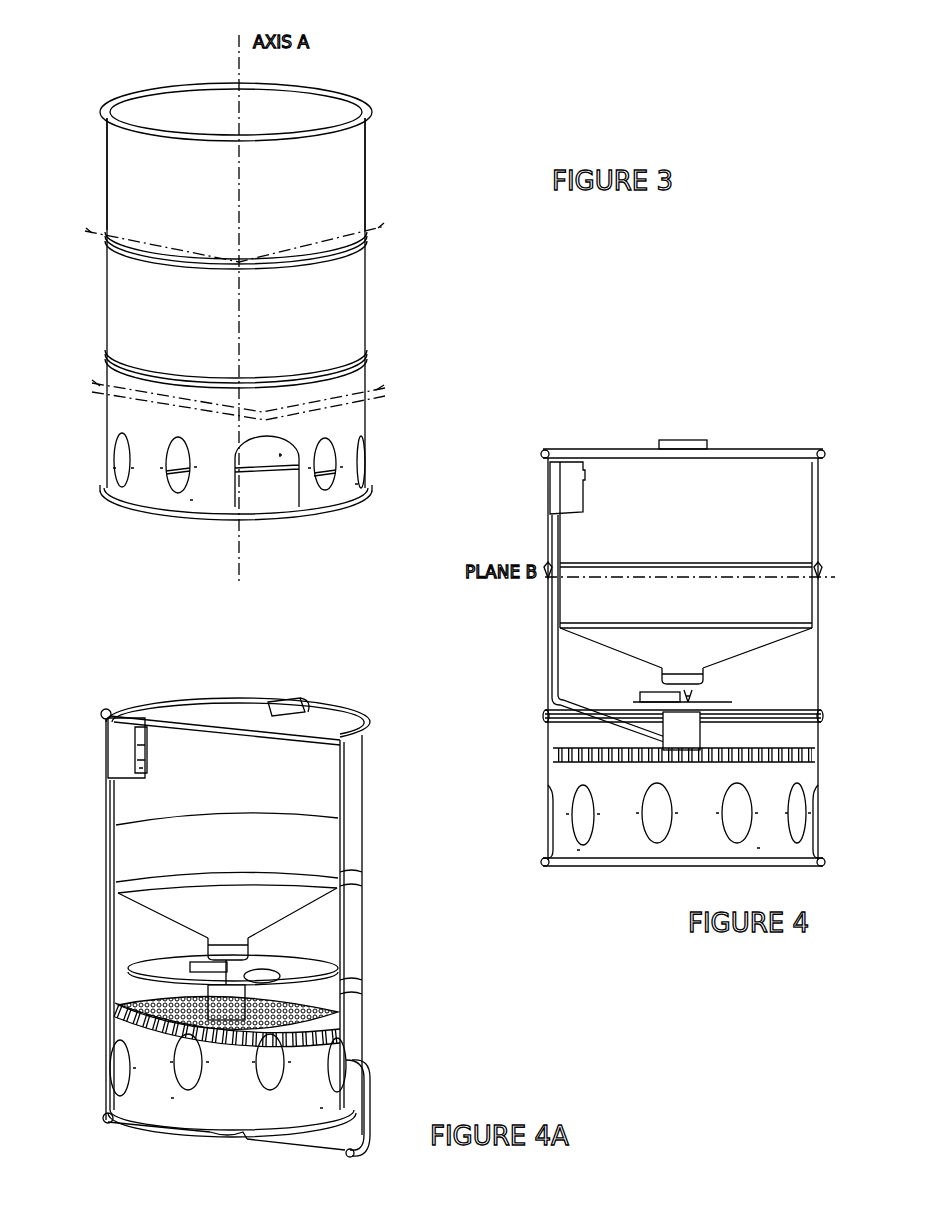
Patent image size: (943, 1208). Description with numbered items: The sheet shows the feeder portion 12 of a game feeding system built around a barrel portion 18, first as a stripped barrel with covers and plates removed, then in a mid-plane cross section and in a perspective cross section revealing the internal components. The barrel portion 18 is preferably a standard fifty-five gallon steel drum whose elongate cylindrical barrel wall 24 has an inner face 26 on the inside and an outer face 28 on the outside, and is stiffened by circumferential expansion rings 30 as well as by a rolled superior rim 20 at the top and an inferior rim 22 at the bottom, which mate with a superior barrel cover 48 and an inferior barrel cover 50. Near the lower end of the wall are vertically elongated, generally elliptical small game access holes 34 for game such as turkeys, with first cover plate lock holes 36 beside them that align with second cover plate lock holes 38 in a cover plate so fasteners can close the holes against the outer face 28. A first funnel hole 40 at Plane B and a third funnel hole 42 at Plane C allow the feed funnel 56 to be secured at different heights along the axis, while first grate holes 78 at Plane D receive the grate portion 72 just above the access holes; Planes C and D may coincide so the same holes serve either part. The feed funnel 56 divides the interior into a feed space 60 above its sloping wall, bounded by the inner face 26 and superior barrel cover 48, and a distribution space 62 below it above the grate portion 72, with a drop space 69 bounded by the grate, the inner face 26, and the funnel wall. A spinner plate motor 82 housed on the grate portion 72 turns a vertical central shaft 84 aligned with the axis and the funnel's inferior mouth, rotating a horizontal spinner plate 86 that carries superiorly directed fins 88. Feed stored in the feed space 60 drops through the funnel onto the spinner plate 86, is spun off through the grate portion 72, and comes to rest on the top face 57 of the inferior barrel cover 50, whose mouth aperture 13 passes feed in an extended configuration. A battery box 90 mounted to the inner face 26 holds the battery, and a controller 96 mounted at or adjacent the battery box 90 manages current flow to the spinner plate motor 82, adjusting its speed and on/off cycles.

In FIG. 4, the feeder portion 12 is at (762, 424).
In FIG. 4A, the mouth aperture 13 is at (229, 1142).
In FIG. 3, the barrel portion 18 is at (83, 76).
In FIG. 3, the superior rim 20 is at (348, 96).
In FIG. 3, the inferior rim 22 is at (108, 506).
In FIG. 3, the barrel wall 24 is at (104, 182).
In FIG. 4A, the barrel wall 24 is at (364, 798).
In FIG. 3, the inner face 26 is at (213, 110).
In FIG. 4, the inner face 26 is at (806, 541).
In FIG. 3, the outer face 28 is at (325, 165).
In FIG. 4A, the outer face 28 is at (352, 758).
In FIG. 3, the expansion ring 30 is at (372, 251).
In FIG. 3, the small game access hole 34 is at (182, 486).
In FIG. 4, the small game access hole 34 is at (650, 832).
In FIG. 3, the first cover plate lock hole 36 is at (206, 480).
In FIG. 4, the first cover plate lock hole 36 is at (594, 822).
In FIG. 3, the second cover plate lock hole 38 is at (362, 492).
In FIG. 3, the first funnel hole 40 is at (112, 233).
In FIG. 3, the third funnel hole 42 is at (112, 385).
In FIG. 4A, the superior barrel cover 48 is at (200, 716).
In FIG. 4A, the inferior barrel cover 50 is at (291, 1132).
In FIG. 4, the feed funnel 56 is at (571, 588).
In FIG. 3, the top face 57 is at (284, 500).
In FIG. 4A, the top face 57 is at (222, 1120).
In FIG. 4, the feed space 60 is at (598, 548).
In FIG. 4A, the feed space 60 is at (175, 795).
In FIG. 4, the distribution space 62 is at (778, 681).
In FIG. 4A, the distribution space 62 is at (314, 943).
In FIG. 4, the drop space 69 is at (692, 846).
In FIG. 4A, the drop space 69 is at (310, 1089).
In FIG. 4, the grate portion 72 is at (584, 748).
In FIG. 4A, the grate portion 72 is at (150, 1032).
In FIG. 3, the first grate hole 78 is at (110, 400).
In FIG. 4A, the spinner plate motor 82 is at (233, 1010).
In FIG. 4A, the central shaft 84 is at (300, 990).
In FIG. 4A, the spinner plate 86 is at (287, 950).
In FIG. 4, the fin 88 is at (650, 695).
In FIG. 4A, the battery box 90 is at (107, 748).
In FIG. 4A, the controller 96 is at (146, 758).